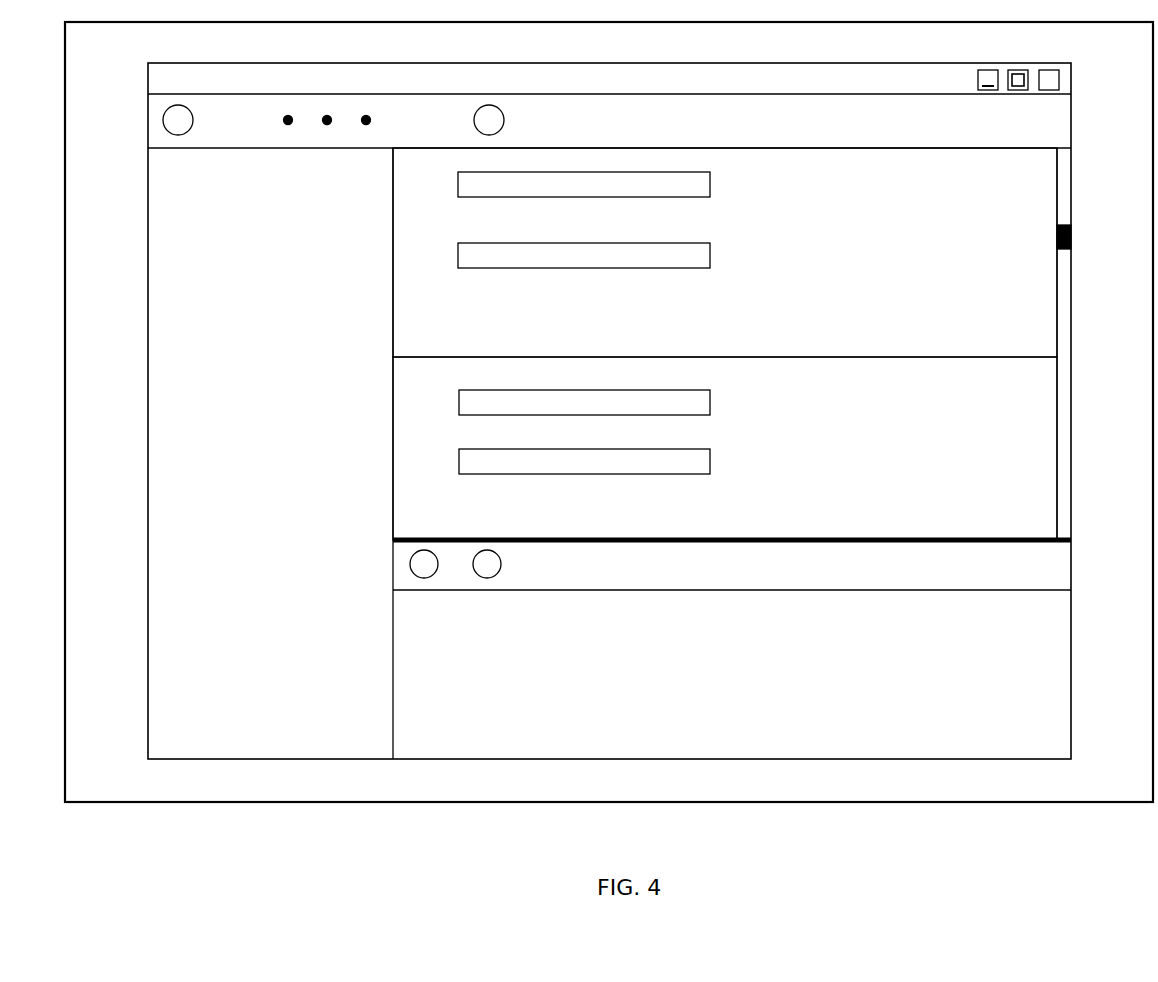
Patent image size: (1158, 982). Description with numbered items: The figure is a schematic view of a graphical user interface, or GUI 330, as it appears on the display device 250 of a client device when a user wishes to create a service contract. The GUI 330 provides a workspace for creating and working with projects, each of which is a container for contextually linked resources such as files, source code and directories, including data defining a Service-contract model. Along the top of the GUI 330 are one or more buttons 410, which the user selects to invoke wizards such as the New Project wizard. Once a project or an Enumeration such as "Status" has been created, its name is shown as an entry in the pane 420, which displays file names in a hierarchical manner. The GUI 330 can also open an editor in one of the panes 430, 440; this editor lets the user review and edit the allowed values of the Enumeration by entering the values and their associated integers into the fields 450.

The display device 250 is at (1005, 803).
The graphical user interface (GUI) 330 is at (1071, 200).
The buttons 410 is at (542, 117).
The pane 420 is at (290, 453).
The pane 430 is at (725, 252).
The pane 440 is at (725, 448).
The fields 450 is at (723, 372).